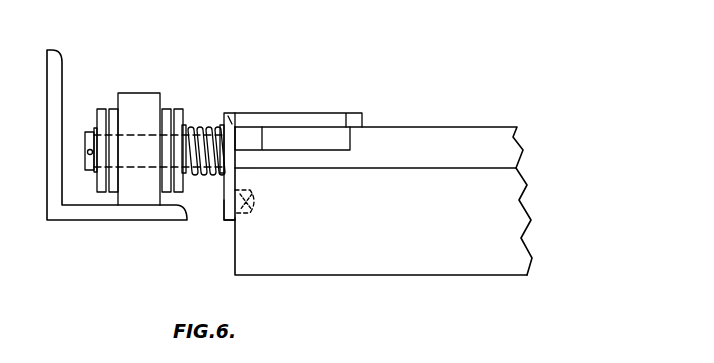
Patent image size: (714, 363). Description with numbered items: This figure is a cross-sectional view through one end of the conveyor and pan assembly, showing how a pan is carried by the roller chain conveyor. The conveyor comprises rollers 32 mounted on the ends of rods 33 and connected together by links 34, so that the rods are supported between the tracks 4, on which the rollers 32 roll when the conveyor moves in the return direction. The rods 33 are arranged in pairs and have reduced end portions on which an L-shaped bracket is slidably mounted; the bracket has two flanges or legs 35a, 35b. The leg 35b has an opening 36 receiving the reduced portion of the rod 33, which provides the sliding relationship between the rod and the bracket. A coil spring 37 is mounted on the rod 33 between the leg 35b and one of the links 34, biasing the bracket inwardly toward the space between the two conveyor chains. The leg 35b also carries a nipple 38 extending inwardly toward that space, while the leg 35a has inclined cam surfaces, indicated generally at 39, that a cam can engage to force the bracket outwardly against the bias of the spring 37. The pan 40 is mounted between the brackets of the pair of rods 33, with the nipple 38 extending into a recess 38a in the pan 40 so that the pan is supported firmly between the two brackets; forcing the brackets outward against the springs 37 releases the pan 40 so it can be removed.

The tracks 4 is at (53, 70).
The rollers 32 is at (140, 198).
The links 34 is at (178, 108).
The coil springs 37 is at (197, 128).
The opening 36 is at (233, 110).
The leg or flange of bracket 35a is at (303, 118).
The leg or flange of bracket 35b is at (228, 219).
The rods 33 is at (468, 100).
The pans 40 is at (370, 268).
The nipple 38 is at (252, 206).
The recess 38a is at (250, 190).
The mounting assembly 39 is at (265, 88).